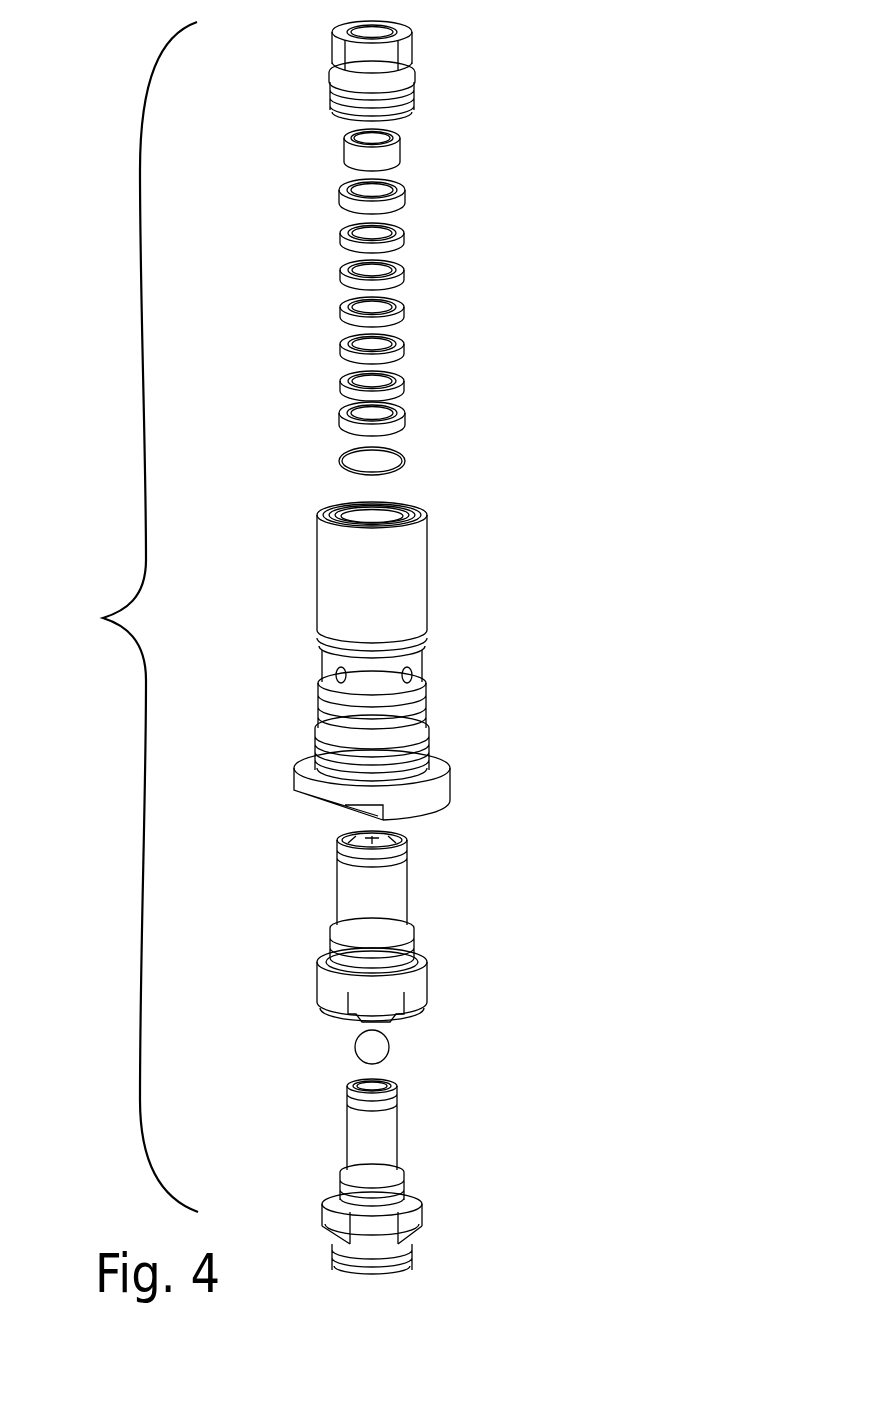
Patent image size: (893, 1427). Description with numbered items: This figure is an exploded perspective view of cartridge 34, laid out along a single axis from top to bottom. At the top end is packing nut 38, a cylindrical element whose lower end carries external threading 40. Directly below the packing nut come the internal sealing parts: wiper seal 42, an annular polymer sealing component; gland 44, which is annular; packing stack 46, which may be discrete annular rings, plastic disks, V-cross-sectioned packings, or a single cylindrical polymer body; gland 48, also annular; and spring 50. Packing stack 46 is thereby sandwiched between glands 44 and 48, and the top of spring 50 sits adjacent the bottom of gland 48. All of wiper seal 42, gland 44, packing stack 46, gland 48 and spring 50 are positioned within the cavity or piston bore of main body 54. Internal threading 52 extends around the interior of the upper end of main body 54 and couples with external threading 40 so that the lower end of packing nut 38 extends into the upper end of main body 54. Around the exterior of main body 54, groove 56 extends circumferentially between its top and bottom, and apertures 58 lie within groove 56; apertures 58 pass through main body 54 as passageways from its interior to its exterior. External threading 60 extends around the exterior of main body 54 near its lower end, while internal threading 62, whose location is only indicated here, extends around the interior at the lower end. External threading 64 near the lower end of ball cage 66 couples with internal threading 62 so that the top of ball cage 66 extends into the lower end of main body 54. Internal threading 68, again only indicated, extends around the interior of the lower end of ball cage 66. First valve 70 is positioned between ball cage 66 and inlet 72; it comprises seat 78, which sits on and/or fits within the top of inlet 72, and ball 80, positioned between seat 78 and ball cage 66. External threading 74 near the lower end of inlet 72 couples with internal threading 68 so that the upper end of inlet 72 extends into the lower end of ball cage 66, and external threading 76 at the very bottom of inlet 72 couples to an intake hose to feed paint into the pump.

The cartridge 34 is at (103, 618).
The packing nut 38 is at (395, 58).
The external threading 40 is at (410, 92).
The wiper seal 42 is at (386, 152).
The gland 44 is at (395, 203).
The packing stack 46 is at (420, 222).
The gland 48 is at (405, 423).
The spring 50 is at (336, 460).
The internal threading 52 is at (410, 500).
The main body 54 is at (417, 564).
The groove 56 is at (368, 653).
The apertures 58 is at (346, 672).
The external threading 60 is at (425, 740).
The internal threading 62 is at (416, 828).
The external threading 64 is at (410, 937).
The ball cage 66 is at (420, 977).
The internal threading 68 is at (338, 1028).
The first valve 70 is at (344, 1071).
The inlet 72 is at (412, 1116).
The external threading 74 is at (408, 1180).
The external threading 76 is at (415, 1252).
The seat 78 is at (392, 1082).
The ball 80 is at (381, 1046).